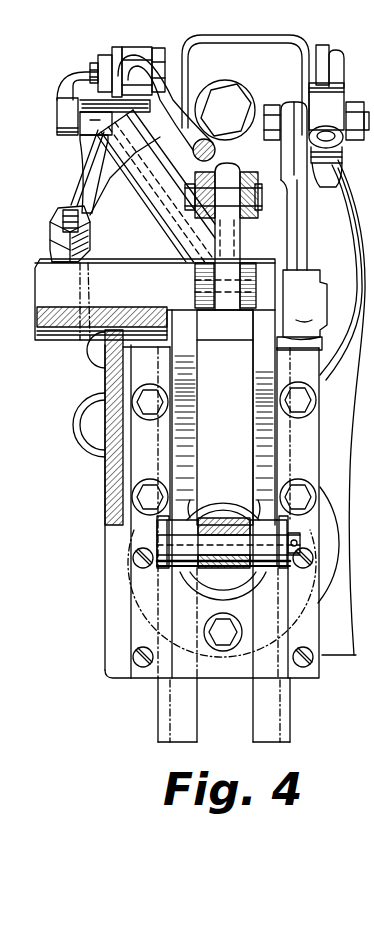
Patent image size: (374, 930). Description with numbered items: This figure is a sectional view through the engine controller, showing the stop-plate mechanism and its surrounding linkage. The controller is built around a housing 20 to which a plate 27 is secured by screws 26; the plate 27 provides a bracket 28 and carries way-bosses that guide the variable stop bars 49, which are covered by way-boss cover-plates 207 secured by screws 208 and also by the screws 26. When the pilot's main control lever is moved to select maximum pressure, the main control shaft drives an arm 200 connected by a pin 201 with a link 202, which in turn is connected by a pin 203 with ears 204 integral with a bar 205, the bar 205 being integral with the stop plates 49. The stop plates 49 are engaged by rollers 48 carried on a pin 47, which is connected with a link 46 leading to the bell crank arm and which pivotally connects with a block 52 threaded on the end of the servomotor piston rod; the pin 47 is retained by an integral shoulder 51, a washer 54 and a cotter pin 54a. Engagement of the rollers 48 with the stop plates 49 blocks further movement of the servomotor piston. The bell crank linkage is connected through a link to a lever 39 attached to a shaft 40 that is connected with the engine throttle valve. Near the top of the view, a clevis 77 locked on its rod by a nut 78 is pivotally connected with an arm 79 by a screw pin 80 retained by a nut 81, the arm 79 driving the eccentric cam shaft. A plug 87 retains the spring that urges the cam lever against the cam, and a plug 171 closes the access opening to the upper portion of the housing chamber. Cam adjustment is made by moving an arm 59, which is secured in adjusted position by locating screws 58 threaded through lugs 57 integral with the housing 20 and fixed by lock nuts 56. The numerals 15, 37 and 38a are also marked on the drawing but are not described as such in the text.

The lever bar 15 is at (179, 117).
The housing 20 is at (330, 569).
The screws 26 is at (152, 386).
The plate 27 is at (105, 585).
The bracket 28 is at (105, 380).
The nut 37 is at (336, 105).
The nut 38a is at (274, 104).
The lever 39 is at (300, 238).
The shaft 40 is at (322, 298).
The link 46 is at (231, 500).
The pin 47 is at (223, 568).
The rollers 48 is at (180, 570).
The variable stop bars 49 is at (250, 434).
The integral shoulder 51 is at (165, 525).
The block 52 is at (200, 505).
The washer 54 is at (285, 520).
The cotter pin 54a is at (300, 545).
The lock nuts 56 is at (55, 250).
The lugs 57 is at (52, 236).
The locating screws 58 is at (60, 218).
The arm 59 is at (80, 178).
The clevis 77 is at (115, 52).
The nut 78 is at (140, 52).
The arm 79 is at (58, 80).
The screw pin 80 is at (182, 52).
The nut 81 is at (96, 62).
The plug 87 is at (243, 86).
The plug 171 is at (340, 57).
The arm 200 is at (205, 172).
The pin 201 is at (247, 194).
The link 202 is at (240, 243).
The pin 203 is at (194, 290).
The ears 204 is at (194, 270).
The bar 205 is at (231, 332).
The way-boss cover-plates 207 is at (140, 636).
The screws 208 is at (133, 560).